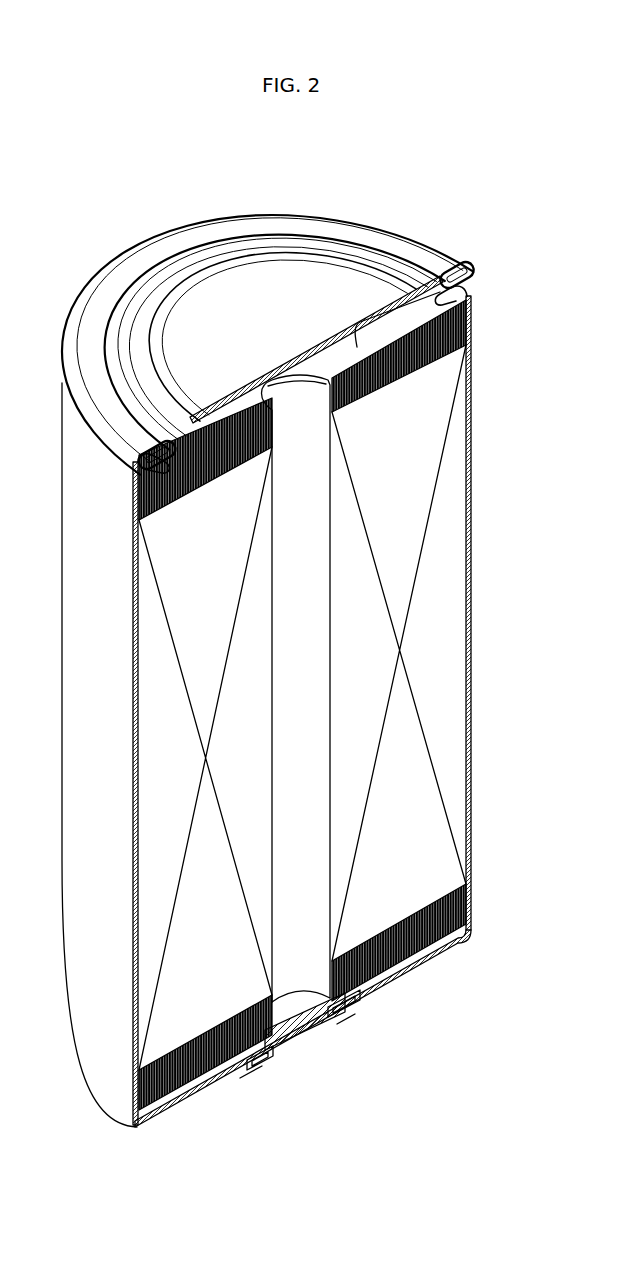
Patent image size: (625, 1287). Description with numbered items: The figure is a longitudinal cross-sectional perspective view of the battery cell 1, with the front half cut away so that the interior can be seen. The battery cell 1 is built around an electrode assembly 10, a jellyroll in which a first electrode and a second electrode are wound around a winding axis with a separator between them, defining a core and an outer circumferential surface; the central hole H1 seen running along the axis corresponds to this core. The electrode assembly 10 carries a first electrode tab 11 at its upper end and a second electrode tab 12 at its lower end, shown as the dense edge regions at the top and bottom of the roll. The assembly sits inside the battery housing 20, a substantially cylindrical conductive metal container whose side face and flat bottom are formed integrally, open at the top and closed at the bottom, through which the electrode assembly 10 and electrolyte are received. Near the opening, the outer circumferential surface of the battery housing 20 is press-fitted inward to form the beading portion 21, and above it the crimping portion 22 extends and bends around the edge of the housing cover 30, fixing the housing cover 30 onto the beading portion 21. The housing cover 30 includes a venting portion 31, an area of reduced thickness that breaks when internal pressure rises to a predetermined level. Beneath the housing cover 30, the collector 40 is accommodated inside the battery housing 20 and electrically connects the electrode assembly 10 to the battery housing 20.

The battery cell 1 is at (96, 207).
The electrode assembly 10 is at (433, 650).
The first electrode tab 11 is at (468, 320).
The second electrode tab 12 is at (450, 915).
The battery housing 20 is at (471, 573).
The beading portion 21 is at (478, 286).
The crimping portion 22 is at (480, 263).
The housing cover 30 is at (260, 288).
The venting portion 31 is at (325, 262).
The collector 40 is at (356, 347).
The winding center hole H1 is at (300, 503).